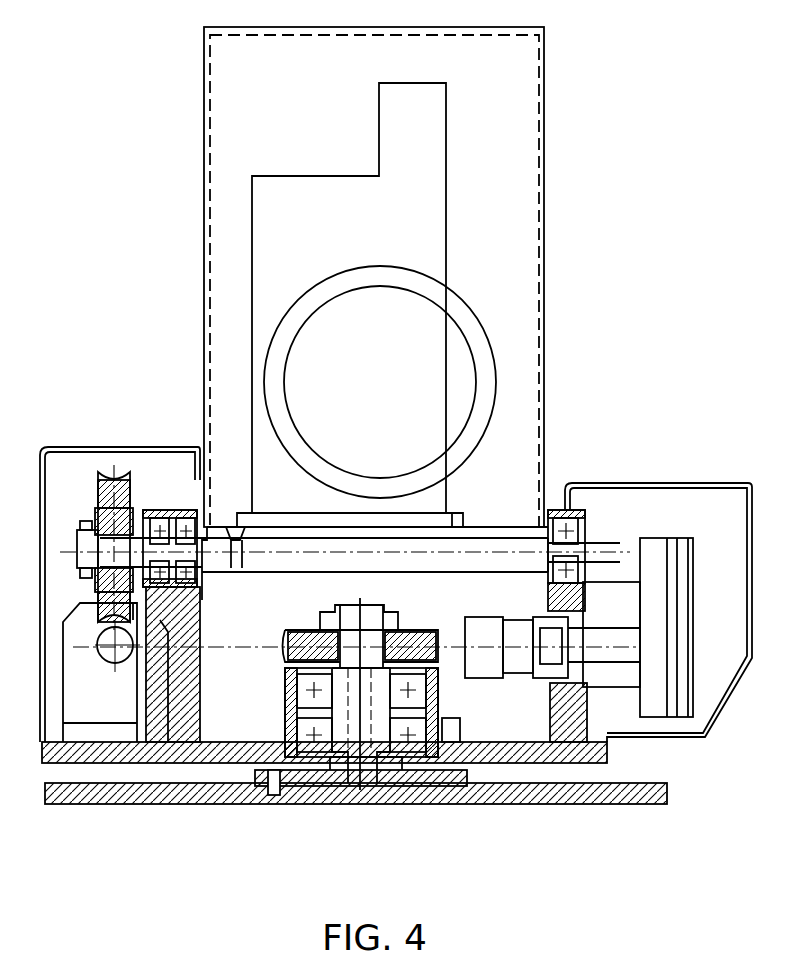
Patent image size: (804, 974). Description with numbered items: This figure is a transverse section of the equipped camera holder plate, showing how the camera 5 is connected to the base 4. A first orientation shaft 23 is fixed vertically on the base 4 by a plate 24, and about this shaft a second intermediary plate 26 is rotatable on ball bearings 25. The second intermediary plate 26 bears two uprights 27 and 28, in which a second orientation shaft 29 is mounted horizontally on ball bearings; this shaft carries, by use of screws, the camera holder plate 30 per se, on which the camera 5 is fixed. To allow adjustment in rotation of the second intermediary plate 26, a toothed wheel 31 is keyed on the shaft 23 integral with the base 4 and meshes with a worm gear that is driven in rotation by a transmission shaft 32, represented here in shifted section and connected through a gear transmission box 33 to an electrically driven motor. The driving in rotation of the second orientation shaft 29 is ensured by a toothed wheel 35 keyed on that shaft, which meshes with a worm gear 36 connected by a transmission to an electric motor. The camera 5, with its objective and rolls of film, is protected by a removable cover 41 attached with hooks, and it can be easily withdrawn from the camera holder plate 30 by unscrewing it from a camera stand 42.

The base 4 is at (600, 796).
The camera 5 is at (297, 395).
The first orientation shaft 23 is at (366, 762).
The plate 24 is at (445, 766).
The ball bearings 25 is at (306, 758).
The second intermediary plate 26 is at (58, 752).
The upright 27 is at (163, 692).
The upright 28 is at (565, 713).
The second orientation shaft 29 is at (277, 568).
The camera holder plate 30 is at (503, 535).
The toothed wheel 31 is at (292, 655).
The transmission shaft 32 is at (518, 660).
The gear transmission box 33 is at (672, 628).
The toothed wheel 35 is at (100, 594).
The worm gear 36 is at (108, 655).
The removable cover 41 is at (205, 236).
The camera stand 42 is at (452, 522).